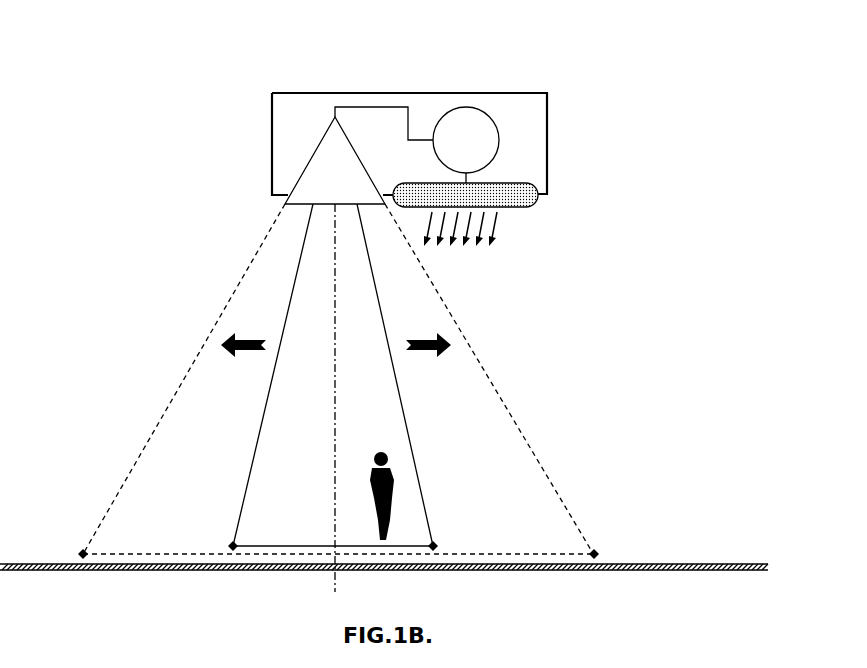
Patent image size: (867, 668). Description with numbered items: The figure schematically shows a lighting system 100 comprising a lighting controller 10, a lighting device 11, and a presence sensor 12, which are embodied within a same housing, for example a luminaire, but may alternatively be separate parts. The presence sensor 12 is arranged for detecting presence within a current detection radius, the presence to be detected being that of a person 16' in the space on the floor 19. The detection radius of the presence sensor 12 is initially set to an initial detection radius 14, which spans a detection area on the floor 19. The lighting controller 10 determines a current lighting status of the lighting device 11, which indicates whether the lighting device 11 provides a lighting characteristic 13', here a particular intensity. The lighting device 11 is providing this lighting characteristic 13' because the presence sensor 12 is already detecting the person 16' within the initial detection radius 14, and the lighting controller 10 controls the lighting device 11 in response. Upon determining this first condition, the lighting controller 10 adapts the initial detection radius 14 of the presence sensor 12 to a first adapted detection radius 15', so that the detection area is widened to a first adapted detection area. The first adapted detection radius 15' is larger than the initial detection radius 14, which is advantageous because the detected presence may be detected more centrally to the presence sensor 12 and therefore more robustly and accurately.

The lighting system 100 is at (258, 77).
The lighting controller 10 is at (590, 121).
The lighting device 11 is at (547, 176).
The presence sensor 12 is at (310, 163).
The lighting characteristic 13' is at (508, 245).
The initial detection radius 14 is at (288, 546).
The first adapted detection radius 15' is at (338, 398).
The person 16' is at (418, 494).
The floor 19 is at (681, 564).